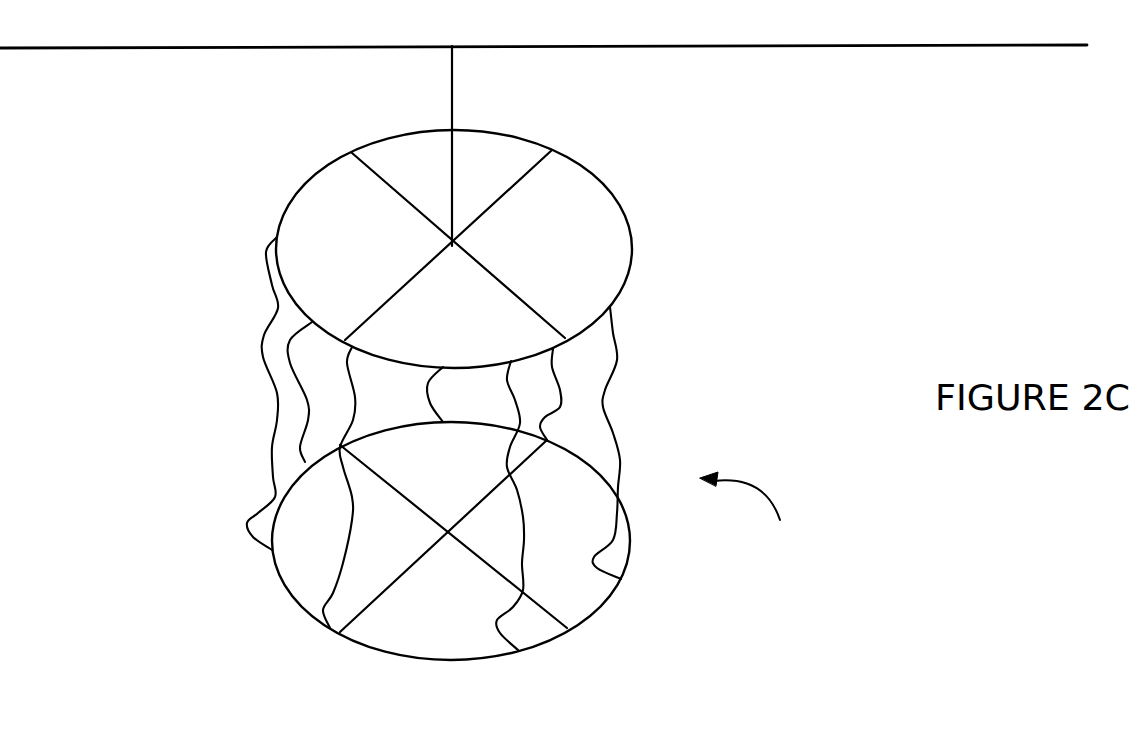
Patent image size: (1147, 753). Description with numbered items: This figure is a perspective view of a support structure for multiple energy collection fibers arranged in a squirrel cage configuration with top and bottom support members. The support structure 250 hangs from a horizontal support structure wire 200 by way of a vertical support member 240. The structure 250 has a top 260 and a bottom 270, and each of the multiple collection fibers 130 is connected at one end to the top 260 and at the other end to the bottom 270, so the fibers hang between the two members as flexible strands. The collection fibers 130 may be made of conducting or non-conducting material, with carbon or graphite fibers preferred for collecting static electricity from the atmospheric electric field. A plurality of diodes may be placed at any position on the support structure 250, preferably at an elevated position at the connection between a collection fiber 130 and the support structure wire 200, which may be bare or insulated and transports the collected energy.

The support structure wire 200 is at (822, 52).
The support member 240 is at (457, 80).
The top 260 is at (632, 242).
The bottom 270 is at (592, 615).
The collection fiber 130 is at (265, 332).
The support structure 250 is at (769, 521).